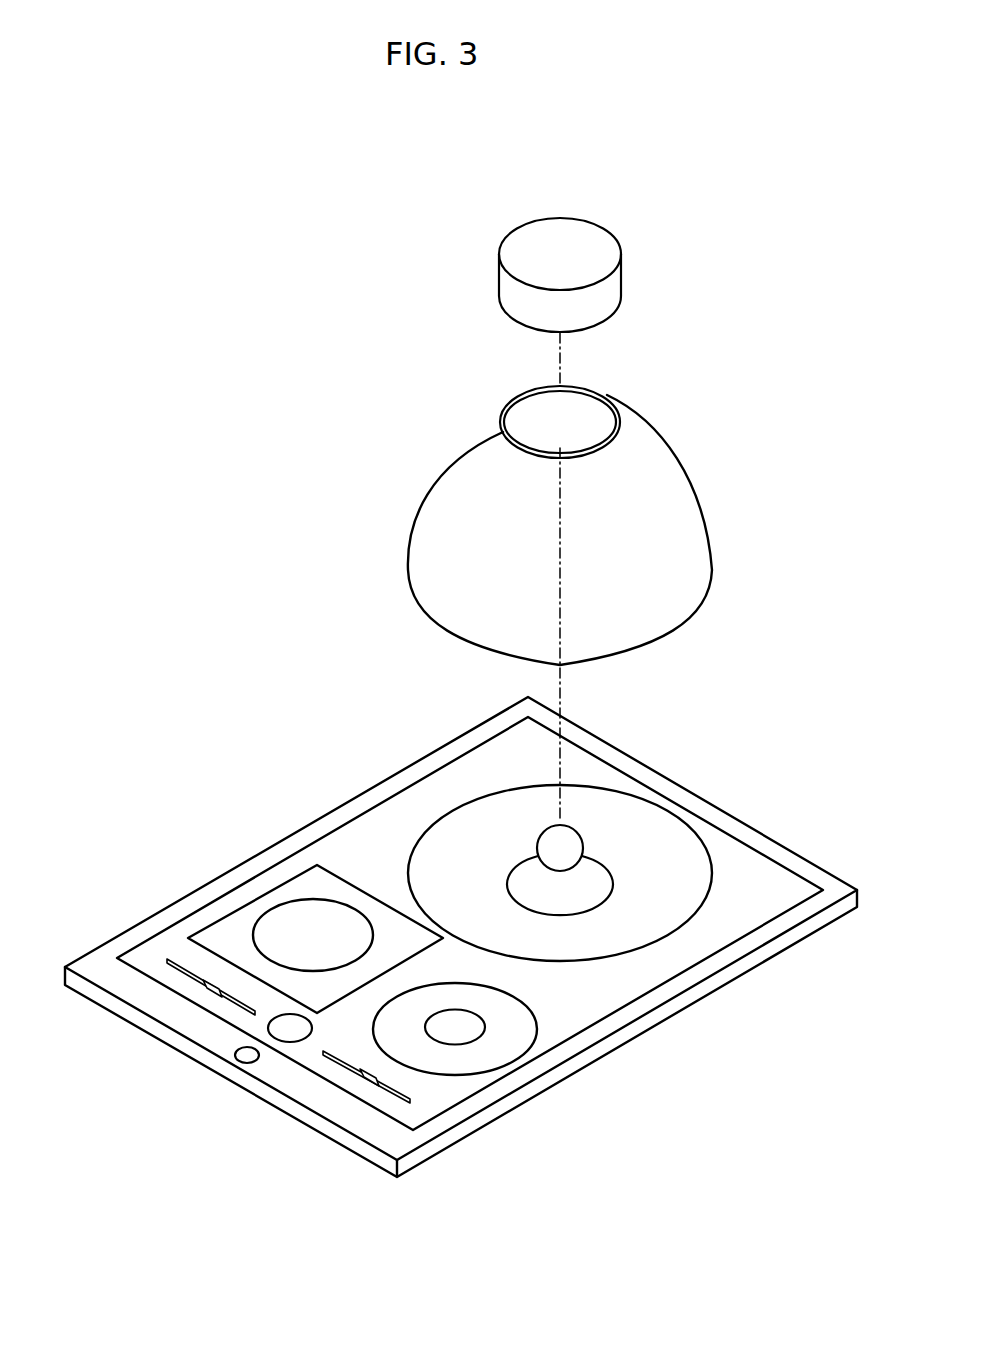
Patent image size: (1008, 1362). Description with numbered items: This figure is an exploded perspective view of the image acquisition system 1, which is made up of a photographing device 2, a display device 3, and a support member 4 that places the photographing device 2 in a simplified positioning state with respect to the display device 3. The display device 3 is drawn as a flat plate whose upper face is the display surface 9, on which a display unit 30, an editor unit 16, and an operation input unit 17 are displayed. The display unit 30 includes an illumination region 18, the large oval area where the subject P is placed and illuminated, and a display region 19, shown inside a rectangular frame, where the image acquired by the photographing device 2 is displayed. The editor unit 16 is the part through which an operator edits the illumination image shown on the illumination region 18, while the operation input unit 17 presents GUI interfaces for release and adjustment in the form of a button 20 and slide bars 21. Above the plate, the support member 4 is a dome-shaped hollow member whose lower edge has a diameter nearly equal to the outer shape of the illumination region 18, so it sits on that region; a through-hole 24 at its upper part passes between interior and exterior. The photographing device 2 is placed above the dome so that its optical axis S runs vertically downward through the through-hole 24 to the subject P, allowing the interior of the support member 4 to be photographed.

The image acquisition system 1 is at (212, 508).
The photographing device 2 is at (590, 222).
The display device 3 is at (508, 1127).
The support member 4 is at (676, 514).
The display surface 9 is at (757, 893).
The editor unit 16 is at (510, 1033).
The operation input unit 17 is at (276, 1072).
The illumination region 18 is at (460, 842).
The display region 19 is at (305, 893).
The button 20 is at (278, 1023).
The slide bars 21 is at (343, 1063).
The through-hole 24 is at (512, 399).
The display unit 30 is at (338, 812).
The subject P is at (556, 840).
The optical axis S is at (567, 686).